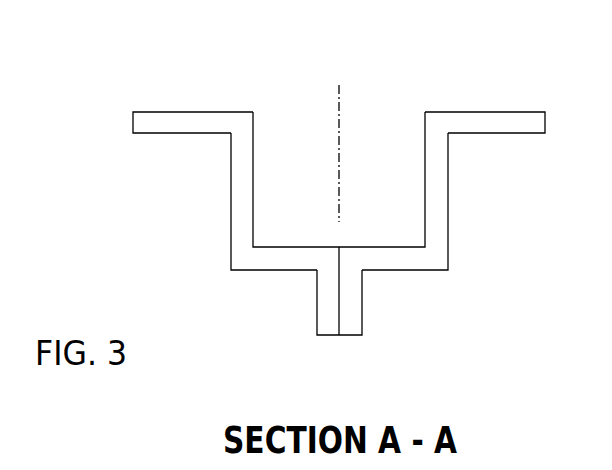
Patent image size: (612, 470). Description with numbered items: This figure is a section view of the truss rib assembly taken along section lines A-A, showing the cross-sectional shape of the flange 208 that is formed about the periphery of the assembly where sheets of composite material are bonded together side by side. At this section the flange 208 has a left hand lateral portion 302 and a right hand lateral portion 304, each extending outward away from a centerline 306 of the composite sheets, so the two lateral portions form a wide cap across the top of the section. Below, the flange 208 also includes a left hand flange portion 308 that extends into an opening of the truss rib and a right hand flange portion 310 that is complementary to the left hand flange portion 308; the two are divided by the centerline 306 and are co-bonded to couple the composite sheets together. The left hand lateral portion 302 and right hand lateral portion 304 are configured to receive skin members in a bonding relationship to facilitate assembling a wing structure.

The flange 208 is at (547, 102).
The left hand lateral portion 302 is at (180, 134).
The right hand lateral portion 304 is at (497, 134).
The centerline 306 is at (339, 125).
The left hand flange portion 308 is at (317, 305).
The right hand flange portion 310 is at (363, 314).